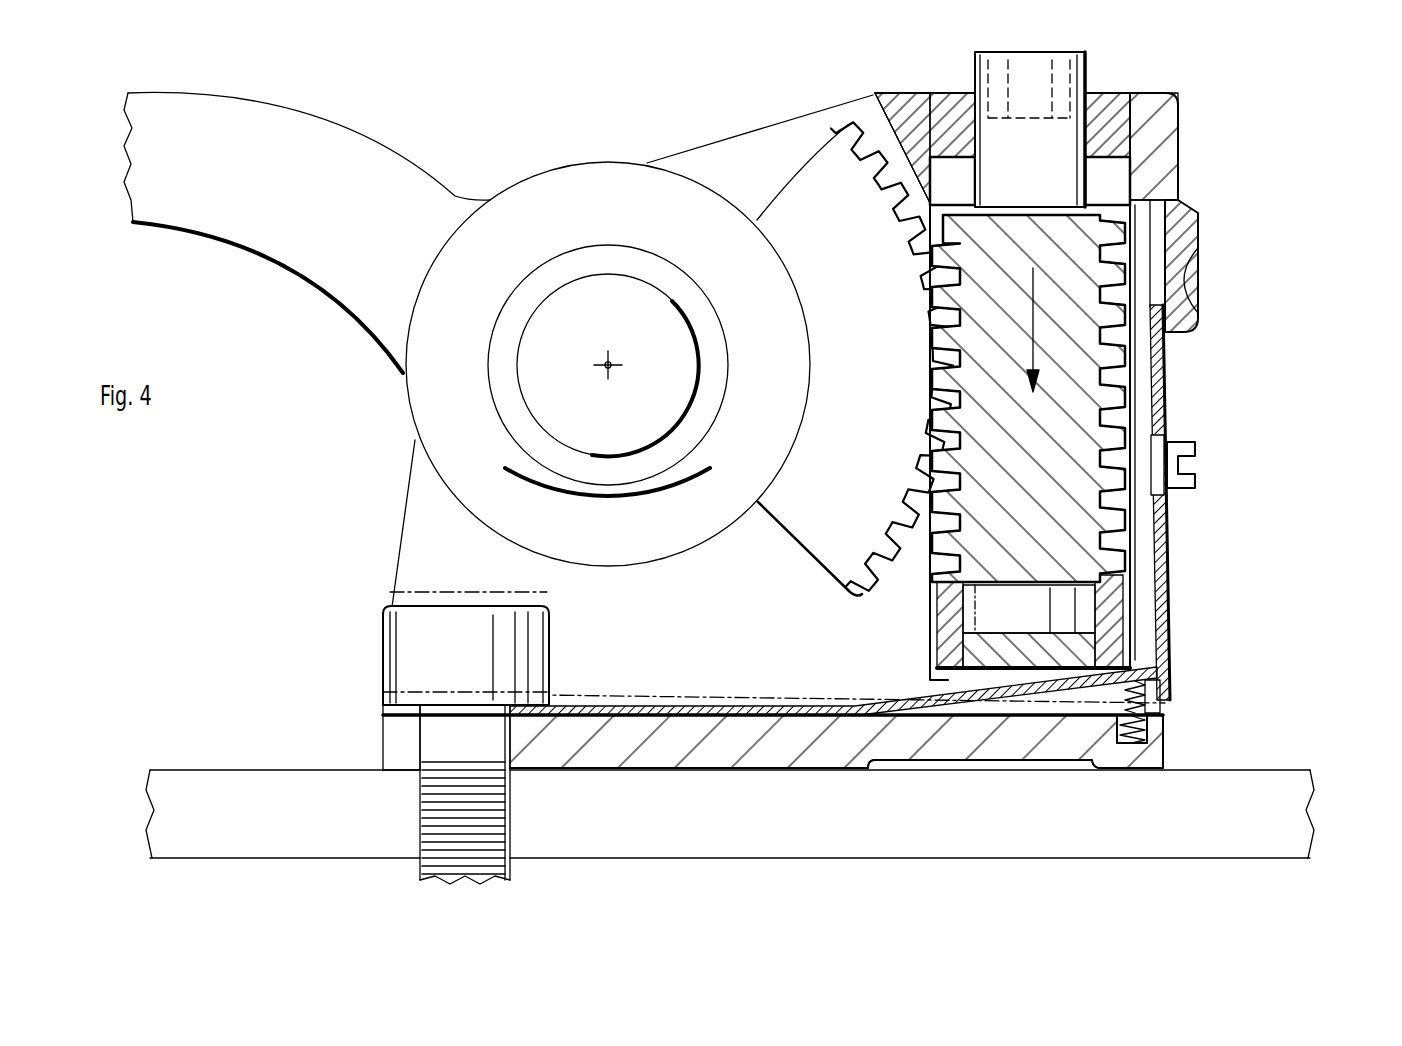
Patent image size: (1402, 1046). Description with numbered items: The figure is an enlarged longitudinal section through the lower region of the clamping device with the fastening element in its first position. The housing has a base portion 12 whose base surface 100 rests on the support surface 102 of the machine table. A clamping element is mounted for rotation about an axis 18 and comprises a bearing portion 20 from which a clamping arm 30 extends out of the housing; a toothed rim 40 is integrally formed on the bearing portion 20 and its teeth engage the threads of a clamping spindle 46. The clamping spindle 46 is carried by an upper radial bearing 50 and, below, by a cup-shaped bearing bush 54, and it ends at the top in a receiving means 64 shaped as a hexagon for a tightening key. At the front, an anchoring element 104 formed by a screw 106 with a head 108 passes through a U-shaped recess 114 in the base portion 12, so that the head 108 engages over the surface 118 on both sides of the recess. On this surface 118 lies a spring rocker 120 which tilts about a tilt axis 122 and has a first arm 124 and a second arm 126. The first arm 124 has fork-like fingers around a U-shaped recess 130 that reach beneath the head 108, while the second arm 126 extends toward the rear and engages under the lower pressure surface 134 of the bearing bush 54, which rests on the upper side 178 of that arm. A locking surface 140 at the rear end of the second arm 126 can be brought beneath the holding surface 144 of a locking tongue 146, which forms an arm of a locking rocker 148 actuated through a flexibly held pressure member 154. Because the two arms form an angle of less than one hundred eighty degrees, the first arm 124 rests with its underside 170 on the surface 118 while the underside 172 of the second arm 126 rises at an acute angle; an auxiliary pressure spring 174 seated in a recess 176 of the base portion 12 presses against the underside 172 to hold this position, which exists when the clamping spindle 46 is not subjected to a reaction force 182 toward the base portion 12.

The base portion 12 is at (705, 745).
The axis 18 is at (606, 363).
The bearing portion 20 is at (585, 185).
The clamping arm 30 is at (268, 132).
The toothed rim 40 is at (835, 165).
The clamping spindle 46 is at (1085, 400).
The upper radial bearing 50 is at (1110, 127).
The bearing bush 54 is at (1110, 593).
The receiving means 64 is at (1070, 80).
The base surface 100 is at (775, 770).
The support surface 102 is at (1300, 770).
The anchoring element 104 is at (388, 662).
The screw 106 is at (425, 790).
The head 108 is at (400, 628).
The U-shaped recess 114 is at (390, 748).
The surface 118 is at (575, 722).
The spring rocker 120 is at (735, 706).
The tilt axis 122 is at (835, 706).
The first arm 124 is at (640, 710).
The second arm 126 is at (1035, 690).
The U-shaped recess 130 is at (386, 710).
The lower pressure surface 134 is at (945, 678).
The locking surface 140 is at (1158, 668).
The holding surface 144 is at (1160, 705).
The locking tongue 146 is at (1165, 620).
The locking rocker 148 is at (1168, 533).
The pressure member 154 is at (1188, 284).
The underside 170 is at (612, 725).
The underside 172 is at (1065, 690).
The auxiliary pressure spring 174 is at (1165, 742).
The recess 176 is at (1160, 720).
The upper side 178 is at (990, 690).
The reaction force 182 is at (1033, 300).